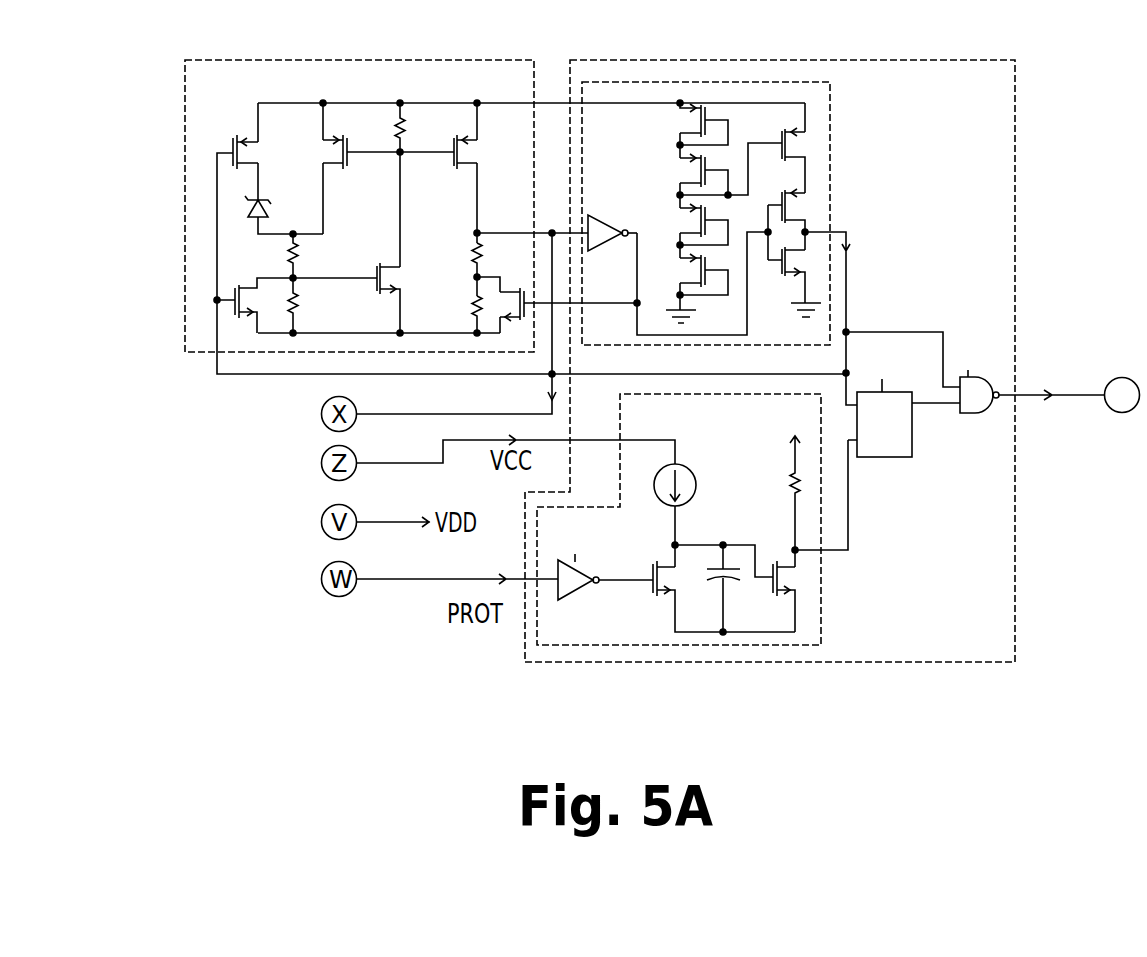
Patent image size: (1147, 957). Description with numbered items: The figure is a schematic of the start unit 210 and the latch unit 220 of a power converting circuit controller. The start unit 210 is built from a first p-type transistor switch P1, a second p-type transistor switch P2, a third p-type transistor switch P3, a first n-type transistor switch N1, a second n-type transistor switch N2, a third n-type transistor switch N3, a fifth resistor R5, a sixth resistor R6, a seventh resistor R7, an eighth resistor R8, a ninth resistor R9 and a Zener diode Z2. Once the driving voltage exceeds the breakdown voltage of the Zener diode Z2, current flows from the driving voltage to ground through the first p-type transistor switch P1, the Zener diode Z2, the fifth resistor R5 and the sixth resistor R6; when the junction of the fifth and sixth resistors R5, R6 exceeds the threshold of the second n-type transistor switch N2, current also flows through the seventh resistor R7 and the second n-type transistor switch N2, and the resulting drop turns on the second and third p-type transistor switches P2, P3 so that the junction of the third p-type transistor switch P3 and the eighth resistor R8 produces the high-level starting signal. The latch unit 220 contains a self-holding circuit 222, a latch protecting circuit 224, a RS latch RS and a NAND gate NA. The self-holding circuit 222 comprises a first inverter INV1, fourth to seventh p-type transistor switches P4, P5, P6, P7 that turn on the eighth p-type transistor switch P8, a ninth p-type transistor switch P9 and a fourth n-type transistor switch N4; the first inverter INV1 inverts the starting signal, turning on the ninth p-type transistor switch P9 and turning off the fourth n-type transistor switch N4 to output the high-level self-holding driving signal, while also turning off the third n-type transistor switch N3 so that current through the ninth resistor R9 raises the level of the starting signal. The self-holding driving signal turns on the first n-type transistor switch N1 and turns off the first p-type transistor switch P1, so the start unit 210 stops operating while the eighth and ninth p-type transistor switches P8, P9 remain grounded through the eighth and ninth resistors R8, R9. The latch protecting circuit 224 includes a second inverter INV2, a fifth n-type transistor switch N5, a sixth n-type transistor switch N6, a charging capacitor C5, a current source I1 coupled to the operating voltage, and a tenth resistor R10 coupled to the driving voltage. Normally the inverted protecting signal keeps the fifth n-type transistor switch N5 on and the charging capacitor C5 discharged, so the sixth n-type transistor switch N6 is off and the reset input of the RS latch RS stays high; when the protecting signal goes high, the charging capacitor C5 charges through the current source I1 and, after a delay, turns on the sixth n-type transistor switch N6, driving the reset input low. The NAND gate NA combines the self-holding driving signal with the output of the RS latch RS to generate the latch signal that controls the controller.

The start unit 210 is at (341, 63).
The latch unit 220 is at (841, 65).
The self-holding circuit 222 is at (828, 150).
The latch protecting circuit 224 is at (820, 580).
The first p-type transistor switch P1 is at (238, 149).
The second p-type transistor switch P2 is at (388, 168).
The third p-type transistor switch P3 is at (479, 173).
The fourth p-type transistor switch P4 is at (686, 130).
The fifth p-type transistor switch P5 is at (713, 175).
The sixth p-type transistor switch P6 is at (686, 231).
The seventh p-type transistor switch P7 is at (686, 288).
The eighth p-type transistor switch P8 is at (789, 148).
The ninth p-type transistor switch P9 is at (790, 209).
The first n-type transistor switch N1 is at (297, 294).
The second n-type transistor switch N2 is at (382, 284).
The third n-type transistor switch N3 is at (557, 296).
The fourth n-type transistor switch N4 is at (797, 282).
The fifth n-type transistor switch N5 is at (716, 598).
The sixth n-type transistor switch N6 is at (780, 589).
The fifth resistor R5 is at (308, 256).
The sixth resistor R6 is at (308, 305).
The seventh resistor R7 is at (416, 185).
The eighth resistor R8 is at (461, 267).
The ninth resistor R9 is at (461, 313).
The tenth resistor R10 is at (777, 476).
The Zener diode Z2 is at (284, 215).
The charging capacitor C5 is at (716, 588).
The current source I1 is at (526, 501).
The first inverter INV1 is at (612, 216).
The second inverter INV2 is at (601, 580).
The RS latch RS is at (878, 450).
The NAND gate NA is at (972, 413).